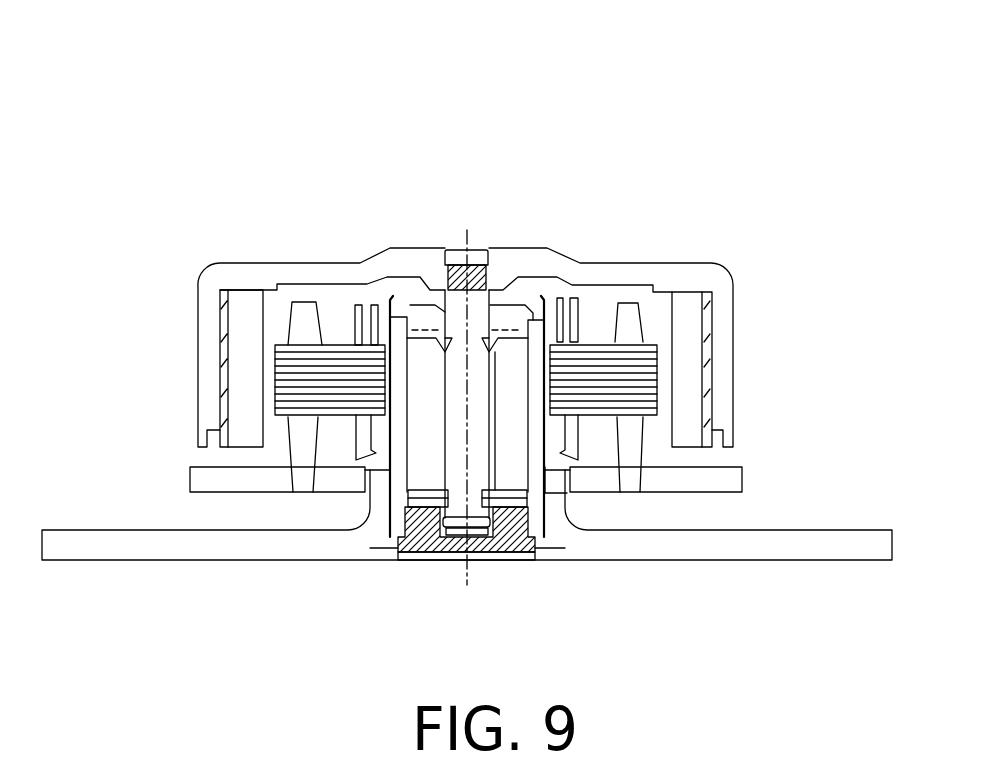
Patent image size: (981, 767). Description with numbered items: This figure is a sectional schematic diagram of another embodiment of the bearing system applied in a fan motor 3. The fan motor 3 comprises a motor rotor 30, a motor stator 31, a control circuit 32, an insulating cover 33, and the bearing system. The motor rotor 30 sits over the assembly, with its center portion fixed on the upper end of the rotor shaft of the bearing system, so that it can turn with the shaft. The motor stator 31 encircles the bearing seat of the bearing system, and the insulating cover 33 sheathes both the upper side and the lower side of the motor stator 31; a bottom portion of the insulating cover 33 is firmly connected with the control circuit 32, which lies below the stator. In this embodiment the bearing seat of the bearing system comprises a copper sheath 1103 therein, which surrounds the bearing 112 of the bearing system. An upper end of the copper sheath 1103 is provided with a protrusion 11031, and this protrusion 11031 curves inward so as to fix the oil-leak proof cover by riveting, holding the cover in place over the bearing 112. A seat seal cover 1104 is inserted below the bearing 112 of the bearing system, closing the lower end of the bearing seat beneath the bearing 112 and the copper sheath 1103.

The fan motor 3 is at (442, 132).
The motor rotor 30 is at (508, 258).
The protrusion 11031 is at (545, 307).
The insulating cover 33 is at (648, 325).
The motor stator 31 is at (313, 373).
The control circuit 32 is at (728, 480).
The seat seal cover 1104 is at (318, 543).
The bearing 112 is at (425, 480).
The copper sheath 1103 is at (537, 480).